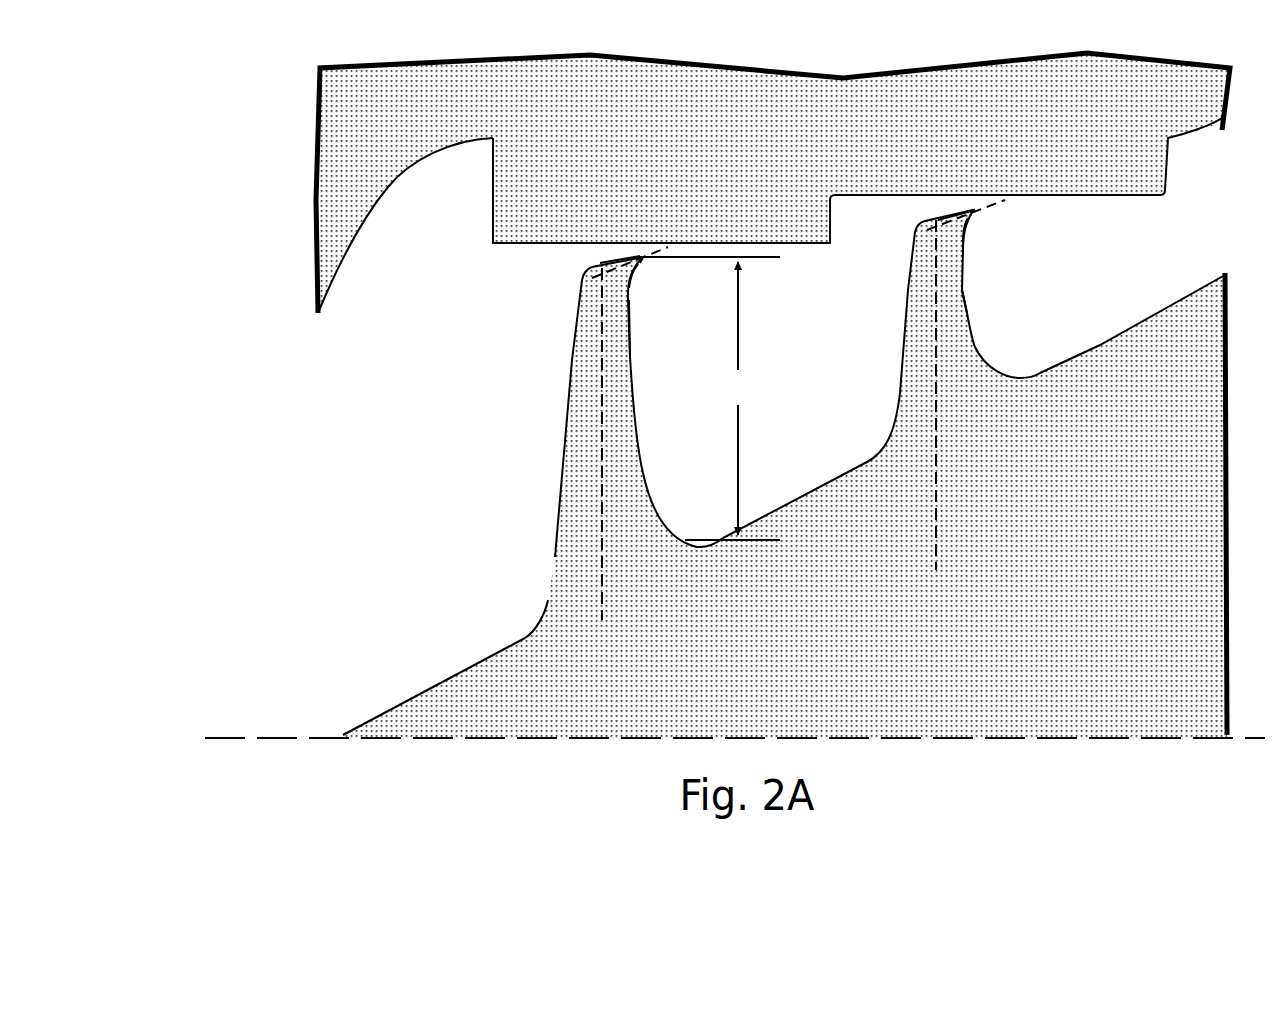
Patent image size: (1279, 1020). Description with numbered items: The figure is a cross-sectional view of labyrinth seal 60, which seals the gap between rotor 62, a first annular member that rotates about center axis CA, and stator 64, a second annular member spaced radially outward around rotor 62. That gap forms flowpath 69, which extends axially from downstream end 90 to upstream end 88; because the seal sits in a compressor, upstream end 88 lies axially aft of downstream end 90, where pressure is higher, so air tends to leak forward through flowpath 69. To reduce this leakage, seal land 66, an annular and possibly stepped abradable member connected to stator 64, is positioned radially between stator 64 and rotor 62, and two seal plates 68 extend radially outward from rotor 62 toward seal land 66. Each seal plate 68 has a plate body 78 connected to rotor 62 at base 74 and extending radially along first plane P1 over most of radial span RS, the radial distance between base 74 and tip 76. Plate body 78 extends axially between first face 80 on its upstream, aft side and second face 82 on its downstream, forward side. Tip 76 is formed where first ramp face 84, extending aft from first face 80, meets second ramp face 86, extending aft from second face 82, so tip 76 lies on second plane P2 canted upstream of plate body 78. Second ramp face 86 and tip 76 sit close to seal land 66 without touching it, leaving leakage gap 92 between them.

The labyrinth seal 60 is at (258, 145).
The rotor 62 is at (811, 432).
The stator 64 is at (773, 162).
The seal land 66 is at (648, 175).
The seal plate 68 is at (767, 382).
The flowpath 69 is at (853, 382).
The base 74 is at (570, 595).
The tip 76 is at (640, 257).
The plate body 78 is at (618, 450).
The first face 80 is at (635, 387).
The second face 82 is at (567, 395).
The first ramp face 84 is at (632, 275).
The second ramp face 86 is at (600, 268).
The upstream end 88 is at (1143, 265).
The downstream end 90 is at (343, 442).
The leakage gap 92 is at (617, 252).
The first plane P1 is at (602, 538).
The second plane P2 is at (595, 273).
The radial span dimension RS is at (710, 398).
The center axis CA is at (268, 737).